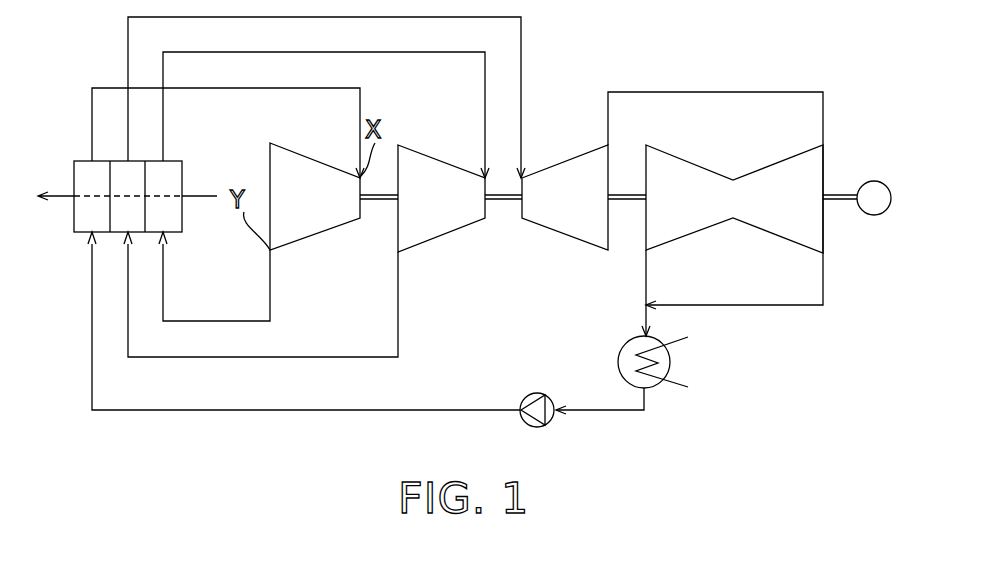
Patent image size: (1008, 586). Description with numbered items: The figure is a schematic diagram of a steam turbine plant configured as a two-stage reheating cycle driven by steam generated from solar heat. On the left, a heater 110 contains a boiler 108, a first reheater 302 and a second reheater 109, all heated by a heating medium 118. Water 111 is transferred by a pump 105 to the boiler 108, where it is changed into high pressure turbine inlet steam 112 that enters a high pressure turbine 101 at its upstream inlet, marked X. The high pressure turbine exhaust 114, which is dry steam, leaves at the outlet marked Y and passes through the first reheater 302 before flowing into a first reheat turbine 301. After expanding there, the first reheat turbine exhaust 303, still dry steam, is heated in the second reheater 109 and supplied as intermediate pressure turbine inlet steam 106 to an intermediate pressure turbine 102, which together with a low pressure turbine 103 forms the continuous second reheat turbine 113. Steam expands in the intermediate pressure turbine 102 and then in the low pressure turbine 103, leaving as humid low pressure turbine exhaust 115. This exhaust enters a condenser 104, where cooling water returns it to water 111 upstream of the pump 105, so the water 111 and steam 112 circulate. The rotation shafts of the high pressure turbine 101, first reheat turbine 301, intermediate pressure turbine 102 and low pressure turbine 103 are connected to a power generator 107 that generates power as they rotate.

The high pressure turbine 101 is at (313, 160).
The first reheat turbine 301 is at (440, 160).
The intermediate pressure turbine 102 is at (573, 158).
The low pressure turbine 103 is at (692, 160).
The condenser 104 is at (625, 340).
The pump 105 is at (540, 393).
The intermediate pressure turbine inlet steam 106 is at (521, 65).
The power generator 107 is at (875, 181).
The boiler 108 is at (73, 173).
The second reheater 109 is at (127, 173).
The heater 110 is at (181, 252).
The water 111 is at (440, 410).
The high pressure turbine inlet steam 112 is at (360, 102).
The second reheat turbine 113 is at (752, 88).
The high pressure turbine exhaust 114 is at (270, 277).
The low pressure turbine exhaust 115 is at (646, 272).
The heating medium 118 is at (200, 196).
The first reheater 302 is at (182, 172).
The first reheat turbine exhaust 303 is at (398, 285).